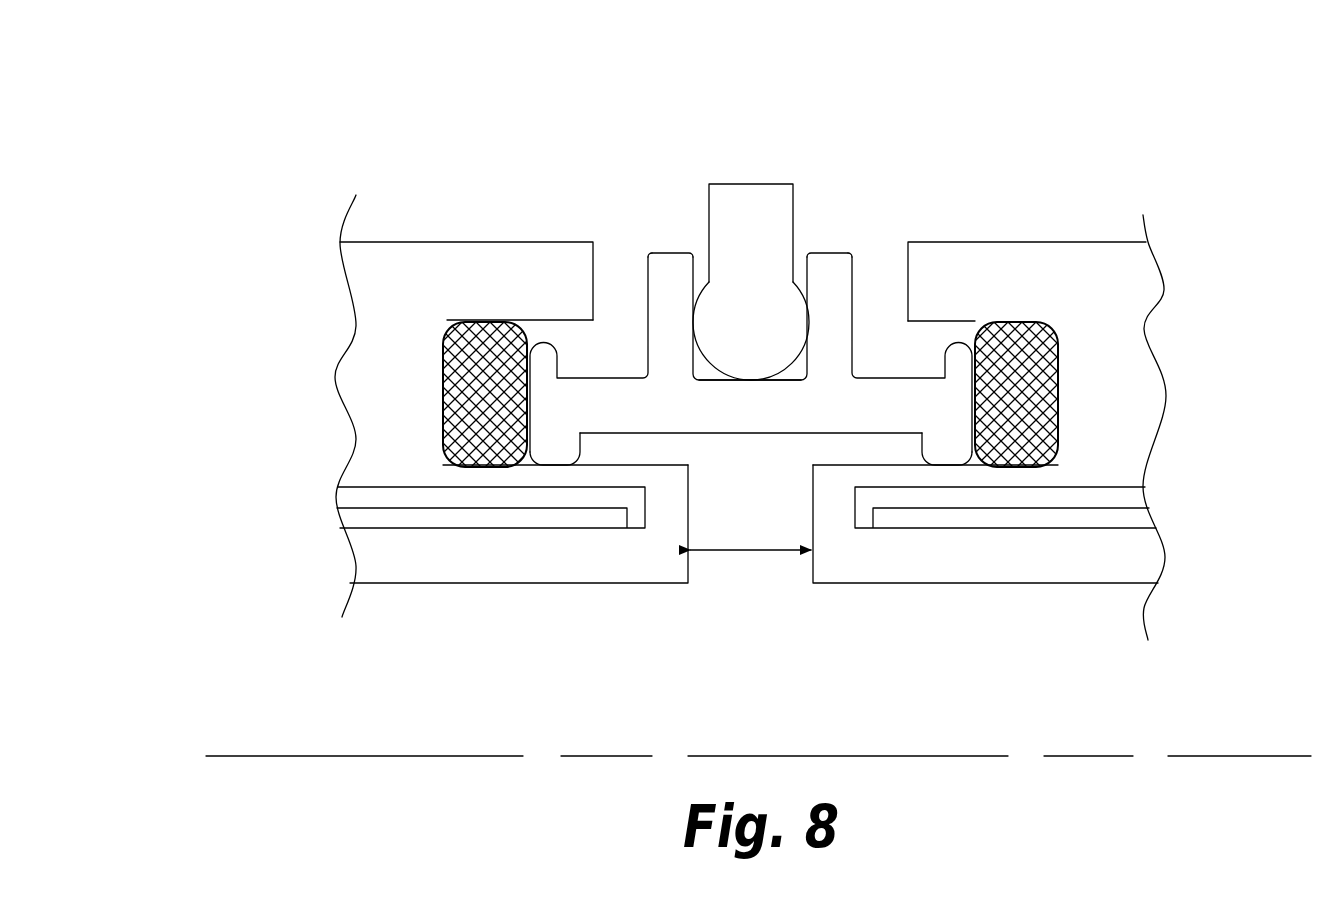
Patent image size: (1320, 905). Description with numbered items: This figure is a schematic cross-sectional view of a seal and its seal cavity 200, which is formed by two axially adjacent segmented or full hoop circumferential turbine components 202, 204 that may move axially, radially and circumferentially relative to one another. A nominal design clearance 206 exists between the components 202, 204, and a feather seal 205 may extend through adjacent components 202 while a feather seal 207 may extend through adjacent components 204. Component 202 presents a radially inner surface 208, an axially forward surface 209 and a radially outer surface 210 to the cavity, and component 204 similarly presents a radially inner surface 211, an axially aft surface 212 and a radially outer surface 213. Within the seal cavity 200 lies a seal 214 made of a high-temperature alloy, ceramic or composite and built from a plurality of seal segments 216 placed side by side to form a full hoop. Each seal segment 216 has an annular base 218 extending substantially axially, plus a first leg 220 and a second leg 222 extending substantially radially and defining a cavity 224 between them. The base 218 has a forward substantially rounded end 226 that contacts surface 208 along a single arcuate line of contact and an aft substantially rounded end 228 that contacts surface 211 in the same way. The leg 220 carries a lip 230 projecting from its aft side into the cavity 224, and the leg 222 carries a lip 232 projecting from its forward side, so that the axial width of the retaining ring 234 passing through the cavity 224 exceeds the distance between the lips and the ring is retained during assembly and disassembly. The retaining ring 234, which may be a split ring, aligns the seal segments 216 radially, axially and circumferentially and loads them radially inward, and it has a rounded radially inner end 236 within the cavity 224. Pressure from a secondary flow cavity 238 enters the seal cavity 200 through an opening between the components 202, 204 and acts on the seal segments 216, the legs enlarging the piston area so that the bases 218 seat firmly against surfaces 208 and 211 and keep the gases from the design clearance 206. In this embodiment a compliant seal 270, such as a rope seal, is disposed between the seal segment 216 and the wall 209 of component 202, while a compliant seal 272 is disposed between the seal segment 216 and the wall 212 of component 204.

The seal cavity 200 is at (902, 236).
The turbine component 202 is at (567, 583).
The turbine component 204 is at (1010, 583).
The feather seal 205 is at (418, 522).
The nominal design clearance 206 is at (750, 552).
The feather seal 207 is at (905, 520).
The radially inner surface 208 is at (535, 466).
The axially forward surface 209 is at (445, 328).
The radially outer surface 210 is at (561, 322).
The radially inner surface 211 is at (973, 465).
The axially aft surface 212 is at (1058, 325).
The radially outer surface 213 is at (931, 322).
The seal 214 is at (823, 225).
The seal segment 216 is at (670, 246).
The annular base 218 is at (747, 433).
The first leg 220 is at (648, 298).
The second leg 222 is at (855, 287).
The cavity 224 is at (803, 366).
The forward substantially rounded end 226 is at (578, 453).
The aft substantially rounded end 228 is at (922, 453).
The lip 230 is at (698, 268).
The lip 232 is at (801, 268).
The retaining ring 234 is at (750, 162).
The rounded radially inner end 236 is at (770, 322).
The secondary flow cavity 238 is at (525, 42).
The compliant seal 270 is at (440, 402).
The compliant seal 272 is at (1060, 403).